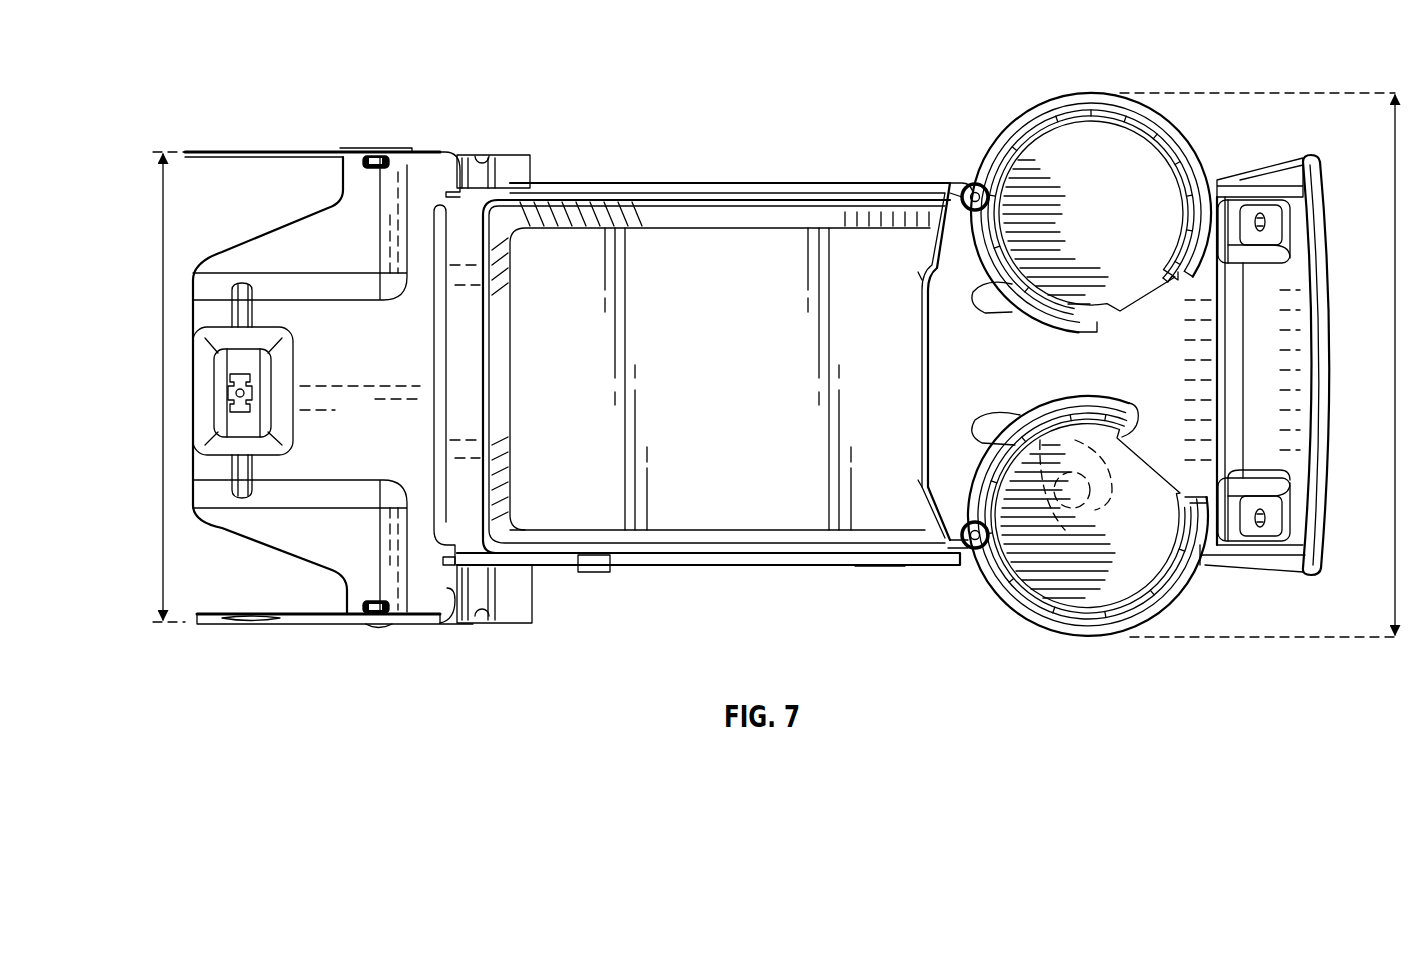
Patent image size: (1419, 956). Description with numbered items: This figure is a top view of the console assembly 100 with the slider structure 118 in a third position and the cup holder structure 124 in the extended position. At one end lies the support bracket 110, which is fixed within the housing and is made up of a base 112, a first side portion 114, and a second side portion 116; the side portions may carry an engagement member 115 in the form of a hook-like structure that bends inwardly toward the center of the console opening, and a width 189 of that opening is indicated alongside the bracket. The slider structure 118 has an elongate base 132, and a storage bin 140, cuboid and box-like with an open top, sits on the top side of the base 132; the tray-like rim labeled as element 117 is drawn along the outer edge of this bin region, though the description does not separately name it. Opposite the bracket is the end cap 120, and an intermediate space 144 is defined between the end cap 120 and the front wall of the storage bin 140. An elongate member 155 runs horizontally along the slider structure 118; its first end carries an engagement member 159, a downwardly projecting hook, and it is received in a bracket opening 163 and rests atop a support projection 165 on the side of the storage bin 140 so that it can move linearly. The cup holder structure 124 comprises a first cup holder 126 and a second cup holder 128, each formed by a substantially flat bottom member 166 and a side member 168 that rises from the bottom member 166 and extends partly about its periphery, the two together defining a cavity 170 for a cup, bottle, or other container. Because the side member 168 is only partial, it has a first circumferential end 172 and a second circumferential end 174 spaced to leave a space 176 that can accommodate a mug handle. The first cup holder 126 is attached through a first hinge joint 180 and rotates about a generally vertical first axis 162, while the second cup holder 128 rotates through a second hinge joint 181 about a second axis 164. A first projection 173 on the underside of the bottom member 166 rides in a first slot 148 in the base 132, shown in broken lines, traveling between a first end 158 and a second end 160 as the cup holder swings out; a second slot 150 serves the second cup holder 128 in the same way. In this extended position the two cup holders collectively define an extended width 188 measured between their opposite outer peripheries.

The console assembly 100 is at (688, 116).
The support bracket 110 is at (277, 148).
The base 112 is at (359, 372).
The first side portion 114 is at (318, 626).
The engagement member 115 is at (466, 150).
The second side portion 116 is at (418, 150).
The tray 117 is at (808, 181).
The slider structure 118 is at (722, 255).
The end cap 120 is at (1326, 446).
The cup holder structure 124 is at (1152, 78).
The first cup holder 126 is at (1135, 567).
The second cup holder 128 is at (1083, 150).
The base 132 is at (743, 395).
The storage bin 140 is at (582, 250).
The intermediate space 144 is at (1175, 392).
The first slot 148 is at (990, 418).
The second slot 150 is at (972, 300).
The elongate member 155 is at (740, 568).
The first end 158 is at (1092, 485).
The engagement member 159 is at (445, 190).
The second end 160 is at (925, 450).
The first axis 162 is at (975, 549).
The bracket opening 163 is at (595, 575).
The second axis 164 is at (975, 184).
The support projection 165 is at (876, 568).
The bottom member 166 is at (1130, 150).
The side member 168 is at (1188, 150).
The cavity 170 is at (1137, 263).
The first circumferential end 172 is at (1150, 413).
The first projection 173 is at (1076, 503).
The second circumferential end 174 is at (1200, 472).
The space 176 is at (1168, 468).
The first hinge joint 180 is at (960, 556).
The second hinge joint 181 is at (962, 190).
The extended width 188 is at (1395, 362).
The width 189 is at (163, 388).